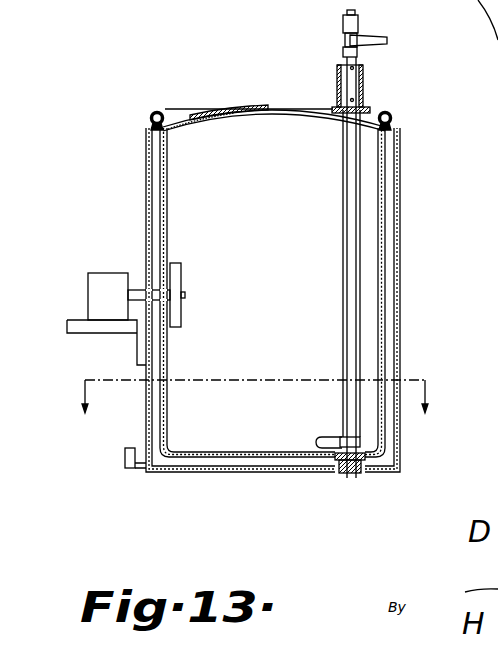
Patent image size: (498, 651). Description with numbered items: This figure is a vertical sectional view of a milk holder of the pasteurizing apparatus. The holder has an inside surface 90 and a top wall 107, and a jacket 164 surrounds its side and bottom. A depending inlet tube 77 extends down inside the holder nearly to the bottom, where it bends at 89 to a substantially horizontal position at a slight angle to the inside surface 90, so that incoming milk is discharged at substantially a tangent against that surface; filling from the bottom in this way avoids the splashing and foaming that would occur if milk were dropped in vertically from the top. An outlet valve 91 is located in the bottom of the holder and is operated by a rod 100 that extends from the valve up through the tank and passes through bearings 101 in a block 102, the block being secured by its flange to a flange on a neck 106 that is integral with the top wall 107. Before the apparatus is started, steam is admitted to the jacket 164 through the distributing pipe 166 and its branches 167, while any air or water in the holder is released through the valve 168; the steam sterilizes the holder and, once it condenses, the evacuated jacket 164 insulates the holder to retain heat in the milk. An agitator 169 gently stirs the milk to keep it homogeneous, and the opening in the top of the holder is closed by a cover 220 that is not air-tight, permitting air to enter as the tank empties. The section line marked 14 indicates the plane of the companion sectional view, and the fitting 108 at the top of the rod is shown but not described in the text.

The section line 14- 14 is at (250, 401).
The inlet tube 77 is at (343, 347).
The bend 89 is at (329, 437).
The inside surface 90 is at (167, 392).
The outlet valve 91 is at (318, 441).
The rod 100 is at (346, 298).
The bearing 101 is at (352, 103).
The block 102 is at (336, 90).
The neck 106 is at (332, 118).
The top wall 107 is at (188, 122).
The handle 108 is at (387, 41).
The jacket 164 is at (147, 215).
The distributing pipe 166 is at (151, 113).
The branch 167 is at (148, 129).
The valve 168 is at (125, 460).
The agitator 169 is at (182, 315).
The cover 220 is at (241, 112).